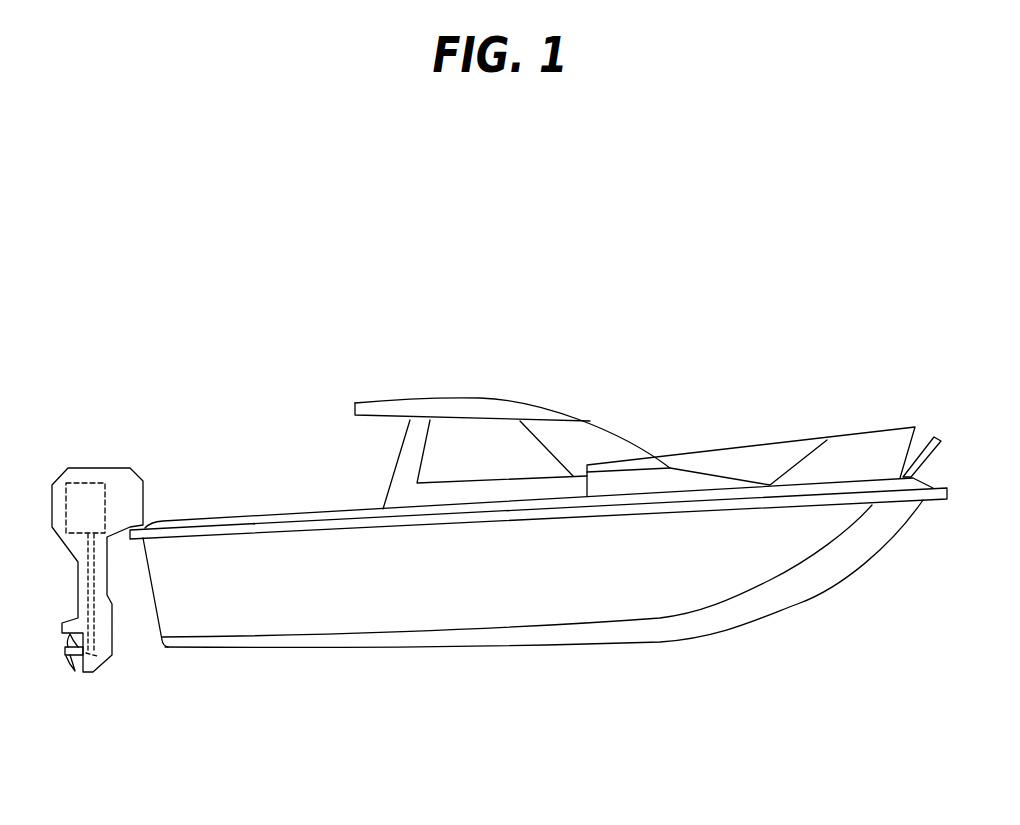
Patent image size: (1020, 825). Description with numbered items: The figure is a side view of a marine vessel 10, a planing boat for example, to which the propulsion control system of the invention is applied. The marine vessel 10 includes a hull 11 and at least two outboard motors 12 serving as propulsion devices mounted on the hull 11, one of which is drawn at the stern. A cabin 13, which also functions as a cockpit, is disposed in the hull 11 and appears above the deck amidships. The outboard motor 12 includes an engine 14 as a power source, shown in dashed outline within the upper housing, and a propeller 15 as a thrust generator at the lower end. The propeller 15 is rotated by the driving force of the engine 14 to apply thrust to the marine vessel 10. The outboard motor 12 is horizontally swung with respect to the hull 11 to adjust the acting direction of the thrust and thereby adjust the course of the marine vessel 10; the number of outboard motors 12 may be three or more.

The marine vessel 10 is at (481, 290).
The hull 11 is at (260, 514).
The outboard motor 12 is at (93, 468).
The cabin 13 is at (533, 401).
The engine 14 is at (105, 502).
The propeller 15 is at (67, 670).